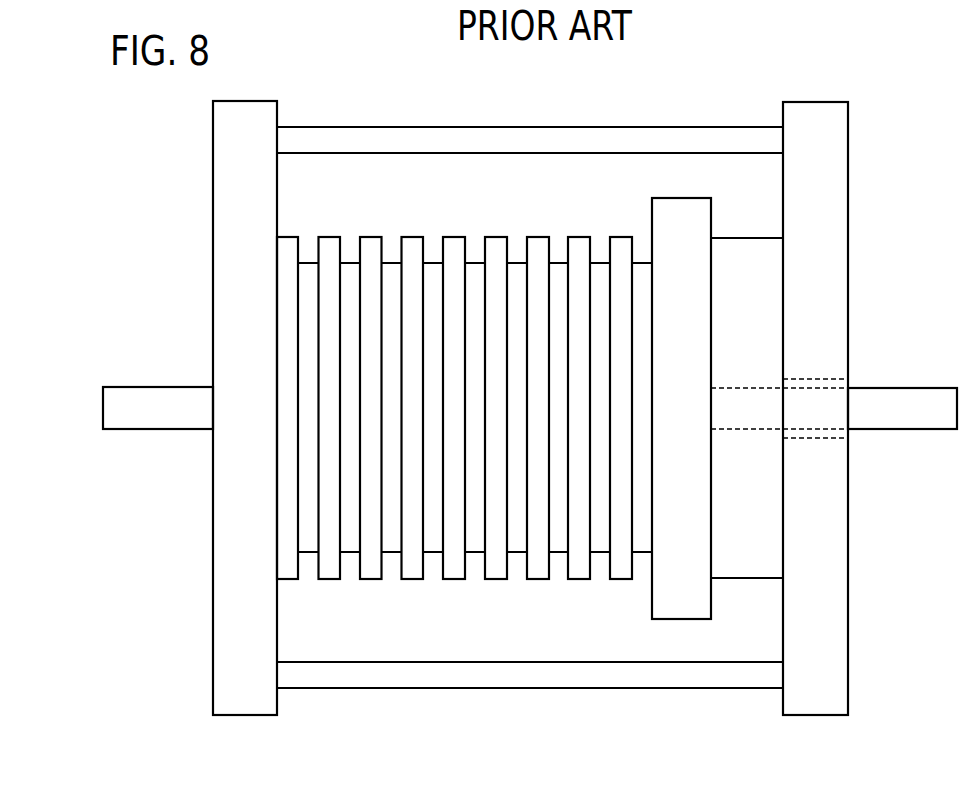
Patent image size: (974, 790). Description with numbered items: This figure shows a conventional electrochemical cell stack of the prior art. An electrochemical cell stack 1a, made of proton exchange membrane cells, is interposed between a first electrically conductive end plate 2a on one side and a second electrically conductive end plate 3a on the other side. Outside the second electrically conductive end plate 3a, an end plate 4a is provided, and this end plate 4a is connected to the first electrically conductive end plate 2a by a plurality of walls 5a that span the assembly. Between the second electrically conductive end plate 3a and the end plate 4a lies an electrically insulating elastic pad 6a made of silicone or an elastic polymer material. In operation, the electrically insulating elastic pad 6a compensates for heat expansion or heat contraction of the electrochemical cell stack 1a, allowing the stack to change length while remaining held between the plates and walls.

The electrochemical cell stack 1a is at (367, 185).
The first electrically conductive end plate 2a is at (227, 607).
The second electrically conductive end plate 3a is at (677, 608).
The end plate 4a is at (838, 140).
The walls 5a is at (556, 140).
The electrically insulating elastic pad 6a is at (767, 295).